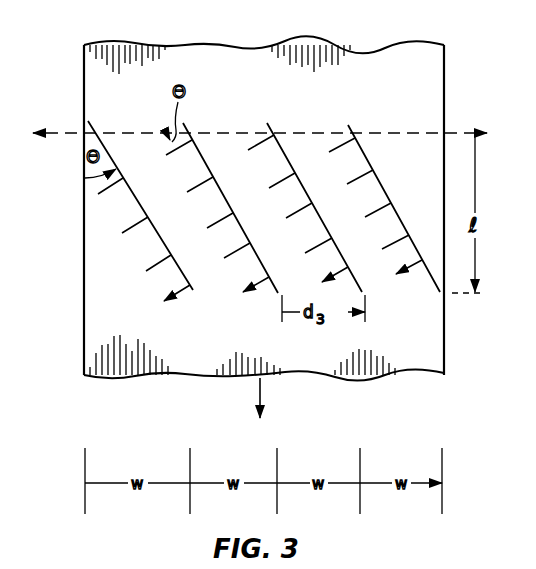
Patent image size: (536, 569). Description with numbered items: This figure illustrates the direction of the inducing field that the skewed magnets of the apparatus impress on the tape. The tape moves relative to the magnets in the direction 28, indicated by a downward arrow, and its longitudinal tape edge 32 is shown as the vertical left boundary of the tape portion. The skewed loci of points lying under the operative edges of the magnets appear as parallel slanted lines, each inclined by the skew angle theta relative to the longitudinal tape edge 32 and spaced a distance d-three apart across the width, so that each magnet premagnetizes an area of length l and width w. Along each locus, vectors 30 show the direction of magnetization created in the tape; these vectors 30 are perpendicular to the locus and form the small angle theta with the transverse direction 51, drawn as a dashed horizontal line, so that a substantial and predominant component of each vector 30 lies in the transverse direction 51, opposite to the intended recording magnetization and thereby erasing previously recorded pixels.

The direction of intended movement of the tape 28 is at (262, 395).
The vectors 30 is at (140, 218).
The longitudinal tape edge 32 is at (84, 252).
The transverse direction 51 is at (414, 133).